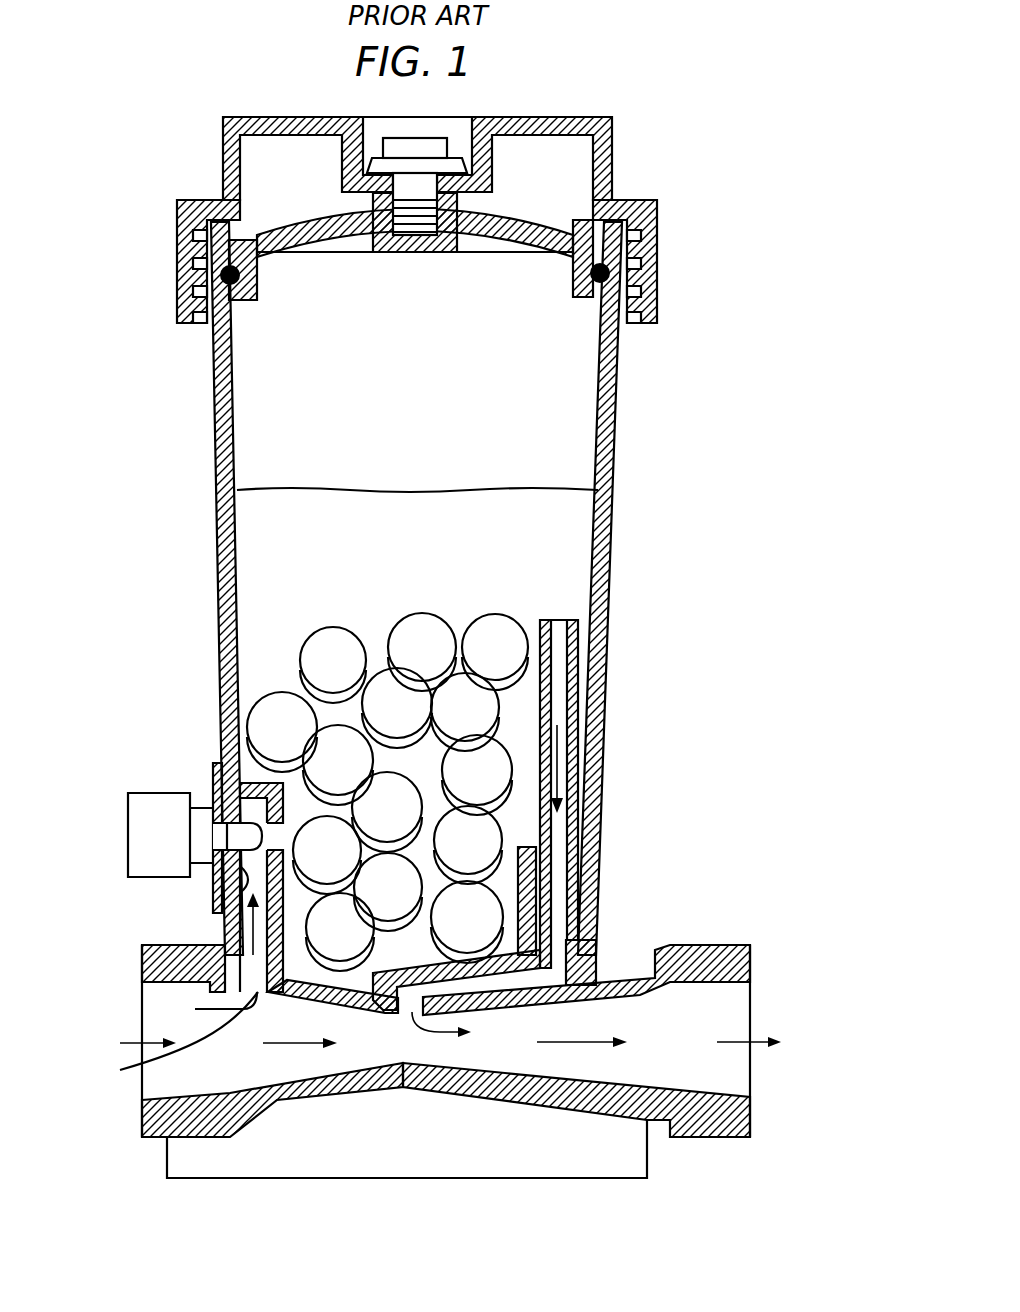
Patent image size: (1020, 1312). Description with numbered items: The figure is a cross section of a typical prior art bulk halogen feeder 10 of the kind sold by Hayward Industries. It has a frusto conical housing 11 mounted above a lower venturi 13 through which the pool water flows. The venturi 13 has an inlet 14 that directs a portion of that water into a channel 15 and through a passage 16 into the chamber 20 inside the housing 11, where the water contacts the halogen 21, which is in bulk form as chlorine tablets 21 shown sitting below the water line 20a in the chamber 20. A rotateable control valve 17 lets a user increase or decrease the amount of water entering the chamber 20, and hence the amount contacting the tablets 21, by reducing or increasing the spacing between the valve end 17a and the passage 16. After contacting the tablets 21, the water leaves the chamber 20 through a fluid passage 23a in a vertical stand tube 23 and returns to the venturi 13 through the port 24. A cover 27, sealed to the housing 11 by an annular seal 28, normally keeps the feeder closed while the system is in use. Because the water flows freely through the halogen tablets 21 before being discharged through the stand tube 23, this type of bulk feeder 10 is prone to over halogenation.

The prior art bulk halogen feeder 10 is at (141, 352).
The frusto conical housing 11 is at (228, 570).
The lower venturi 13 is at (153, 1113).
The inlet 14 is at (434, 1042).
The channel 15 is at (247, 875).
The passage 16 is at (232, 805).
The rotateable control valve 17 is at (147, 812).
The valve end 17a is at (245, 852).
The chamber 20 is at (426, 420).
The water line 20a is at (537, 490).
The halogen tablets 21 is at (417, 643).
The vertical stand tube 23 is at (570, 620).
The fluid passage 23a is at (556, 693).
The port 24 is at (413, 1030).
The cover 27 is at (228, 162).
The annular seal 28 is at (195, 232).